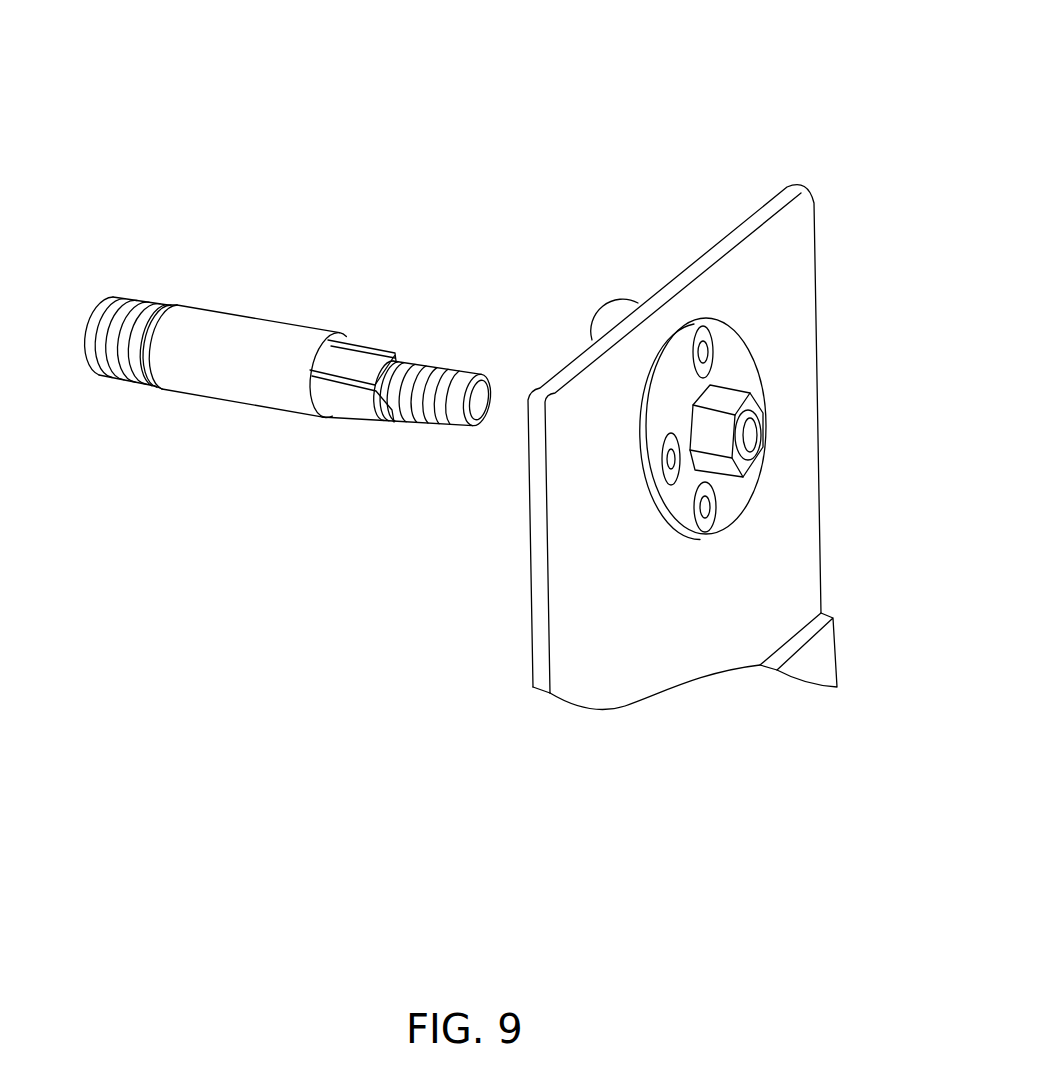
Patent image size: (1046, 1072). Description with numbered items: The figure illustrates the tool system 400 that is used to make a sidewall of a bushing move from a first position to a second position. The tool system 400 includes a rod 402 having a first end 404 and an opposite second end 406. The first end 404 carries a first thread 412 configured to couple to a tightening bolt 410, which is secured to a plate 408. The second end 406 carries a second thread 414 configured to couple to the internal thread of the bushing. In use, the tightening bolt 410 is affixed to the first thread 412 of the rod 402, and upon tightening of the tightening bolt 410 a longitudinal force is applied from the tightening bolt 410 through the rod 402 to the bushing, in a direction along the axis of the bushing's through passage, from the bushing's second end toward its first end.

The tool system 400 is at (674, 85).
The rod 402 is at (232, 327).
The first end 404 is at (477, 378).
The second end 406 is at (110, 296).
The plate 408 is at (783, 327).
The tightening bolt 410 is at (756, 408).
The first thread 412 is at (427, 423).
The second thread 414 is at (120, 380).